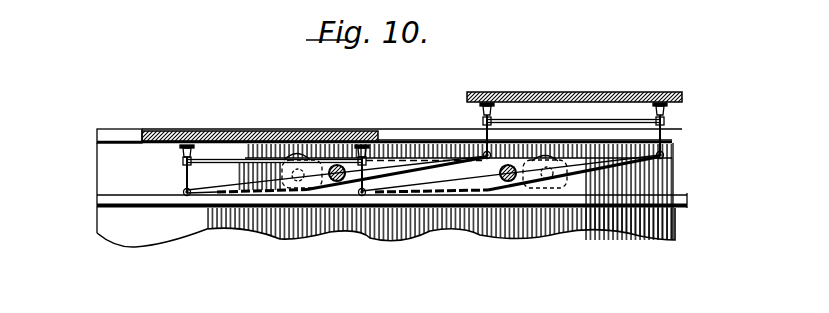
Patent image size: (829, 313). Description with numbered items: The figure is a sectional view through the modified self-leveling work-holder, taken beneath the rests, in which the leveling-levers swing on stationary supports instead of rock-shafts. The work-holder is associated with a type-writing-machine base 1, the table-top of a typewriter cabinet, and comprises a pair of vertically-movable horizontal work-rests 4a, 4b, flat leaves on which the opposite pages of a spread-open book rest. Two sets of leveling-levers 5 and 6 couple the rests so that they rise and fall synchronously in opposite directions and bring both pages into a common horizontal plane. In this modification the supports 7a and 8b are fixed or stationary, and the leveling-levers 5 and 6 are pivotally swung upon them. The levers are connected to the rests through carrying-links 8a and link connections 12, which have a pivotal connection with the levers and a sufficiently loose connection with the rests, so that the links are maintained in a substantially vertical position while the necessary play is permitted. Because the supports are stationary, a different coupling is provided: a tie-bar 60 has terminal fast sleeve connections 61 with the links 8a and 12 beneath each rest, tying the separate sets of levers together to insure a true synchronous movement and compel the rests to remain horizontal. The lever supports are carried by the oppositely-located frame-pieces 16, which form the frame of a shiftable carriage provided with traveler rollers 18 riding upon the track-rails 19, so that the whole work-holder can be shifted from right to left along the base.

The type-writing-machine base 1 is at (131, 122).
The work-rest 4a is at (253, 131).
The work-rest 4b is at (560, 92).
The leveling-lever 5 is at (395, 160).
The leveling-lever 6 is at (640, 167).
The fixed support 7a is at (333, 181).
The carrying-link 8a is at (507, 112).
The fixed support 8b is at (504, 182).
The link connection 12 is at (683, 130).
The frame-piece 16 is at (413, 170).
The traveler roller 18 is at (545, 186).
The track-rail 19 is at (607, 200).
The tie-bar 60 is at (210, 158).
The fast sleeve connection 61 is at (183, 161).